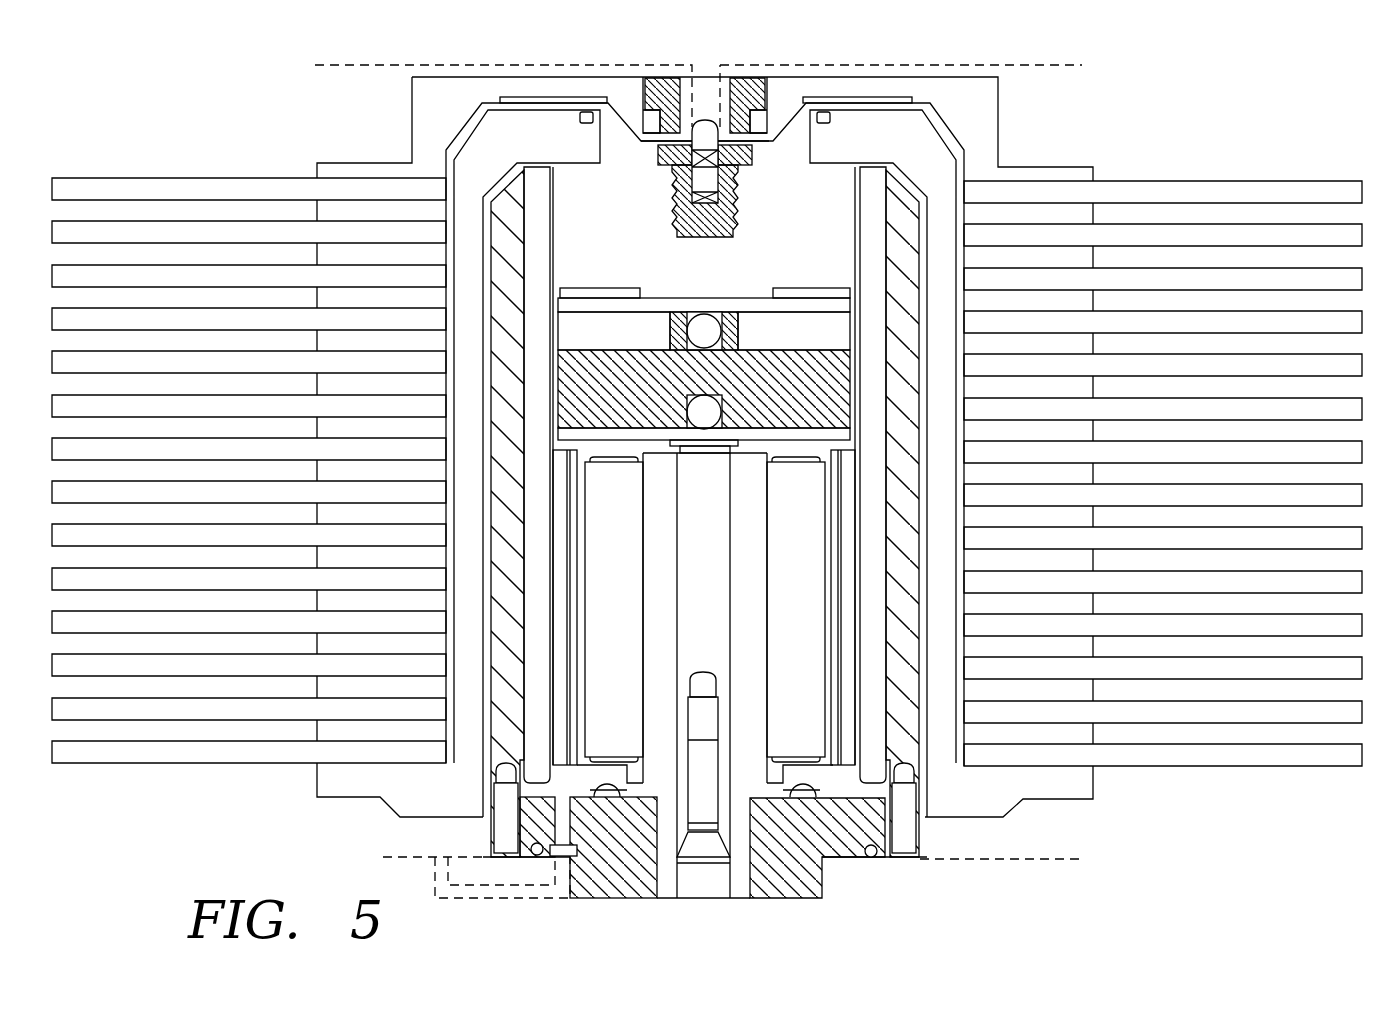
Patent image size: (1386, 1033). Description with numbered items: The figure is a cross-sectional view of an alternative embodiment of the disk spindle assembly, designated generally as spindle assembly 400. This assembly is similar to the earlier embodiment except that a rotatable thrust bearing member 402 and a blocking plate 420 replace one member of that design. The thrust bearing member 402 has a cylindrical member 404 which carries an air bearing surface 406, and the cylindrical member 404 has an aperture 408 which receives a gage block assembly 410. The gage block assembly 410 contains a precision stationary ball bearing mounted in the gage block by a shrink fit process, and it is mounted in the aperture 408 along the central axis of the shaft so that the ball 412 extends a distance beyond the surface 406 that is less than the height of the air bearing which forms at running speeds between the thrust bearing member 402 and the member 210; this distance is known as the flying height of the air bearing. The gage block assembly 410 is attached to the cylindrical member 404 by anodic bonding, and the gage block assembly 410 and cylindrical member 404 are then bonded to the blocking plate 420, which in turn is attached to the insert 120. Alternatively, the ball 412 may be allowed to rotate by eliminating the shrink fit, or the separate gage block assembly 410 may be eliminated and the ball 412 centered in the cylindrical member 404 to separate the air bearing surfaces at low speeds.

The spindle assembly 400 is at (222, 865).
The insert 120 is at (811, 221).
The member 210 is at (792, 392).
The rotatable thrust bearing member 402 is at (600, 320).
The cylindrical member 404 is at (845, 343).
The air bearing surface 406 is at (775, 350).
The aperture 408 is at (660, 312).
The gage block assembly 410 is at (670, 339).
The ball 412 is at (710, 300).
The blocking plate 420 is at (837, 303).